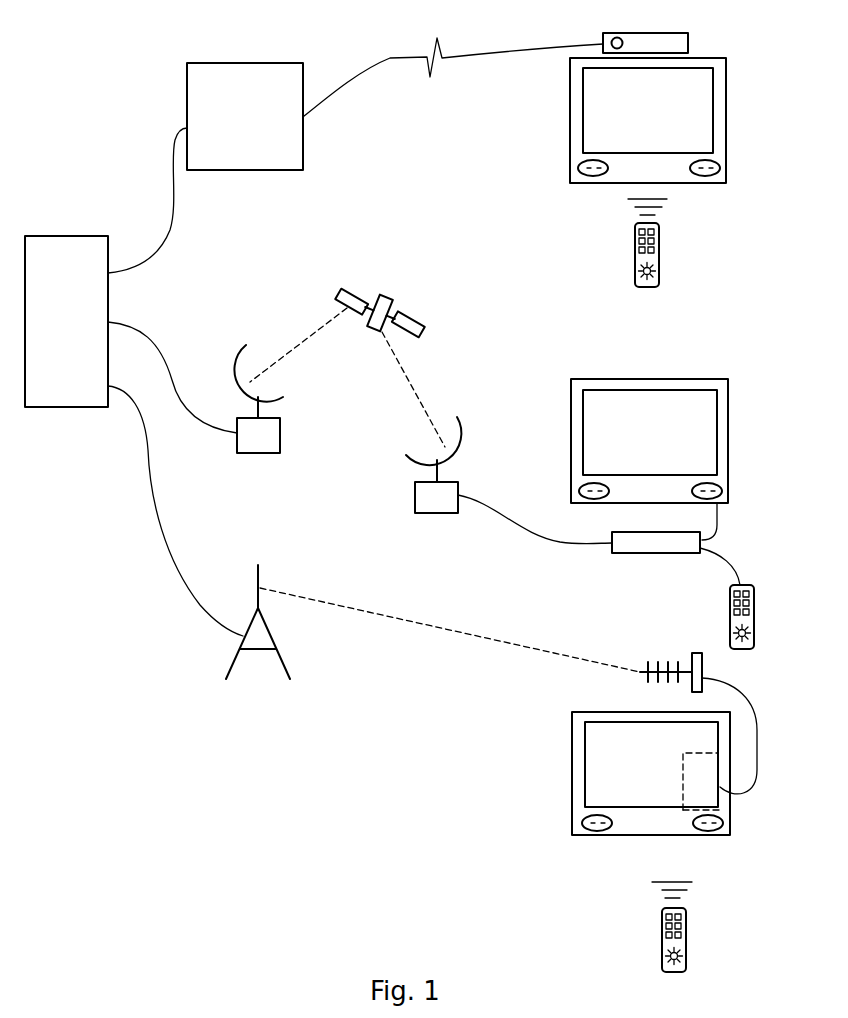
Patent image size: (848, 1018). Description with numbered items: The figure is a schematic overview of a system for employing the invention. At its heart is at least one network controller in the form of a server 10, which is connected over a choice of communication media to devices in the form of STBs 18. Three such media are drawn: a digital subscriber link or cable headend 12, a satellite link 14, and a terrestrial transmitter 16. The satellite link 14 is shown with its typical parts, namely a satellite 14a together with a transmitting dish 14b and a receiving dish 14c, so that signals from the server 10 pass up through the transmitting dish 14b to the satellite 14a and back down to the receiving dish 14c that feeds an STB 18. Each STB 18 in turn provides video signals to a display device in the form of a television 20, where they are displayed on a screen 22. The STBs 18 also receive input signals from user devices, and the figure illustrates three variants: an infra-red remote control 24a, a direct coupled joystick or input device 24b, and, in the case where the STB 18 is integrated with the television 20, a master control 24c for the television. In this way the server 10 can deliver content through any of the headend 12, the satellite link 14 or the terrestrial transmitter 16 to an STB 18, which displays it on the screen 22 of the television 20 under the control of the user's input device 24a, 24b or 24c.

The server 10 is at (78, 329).
The headend 12 is at (255, 126).
The satellite link 14 is at (482, 313).
The satellite 14a is at (392, 300).
The transmitting dish 14b is at (280, 432).
The receiving dish 14c is at (458, 481).
The terrestrial transmitter 16 is at (275, 557).
The STB 18 is at (688, 43).
The television 20 is at (662, 125).
The screen 22 is at (726, 110).
The infra-red remote control 24a is at (661, 249).
The direct coupled joystick or input device 24b is at (755, 598).
The master control 24c is at (687, 925).